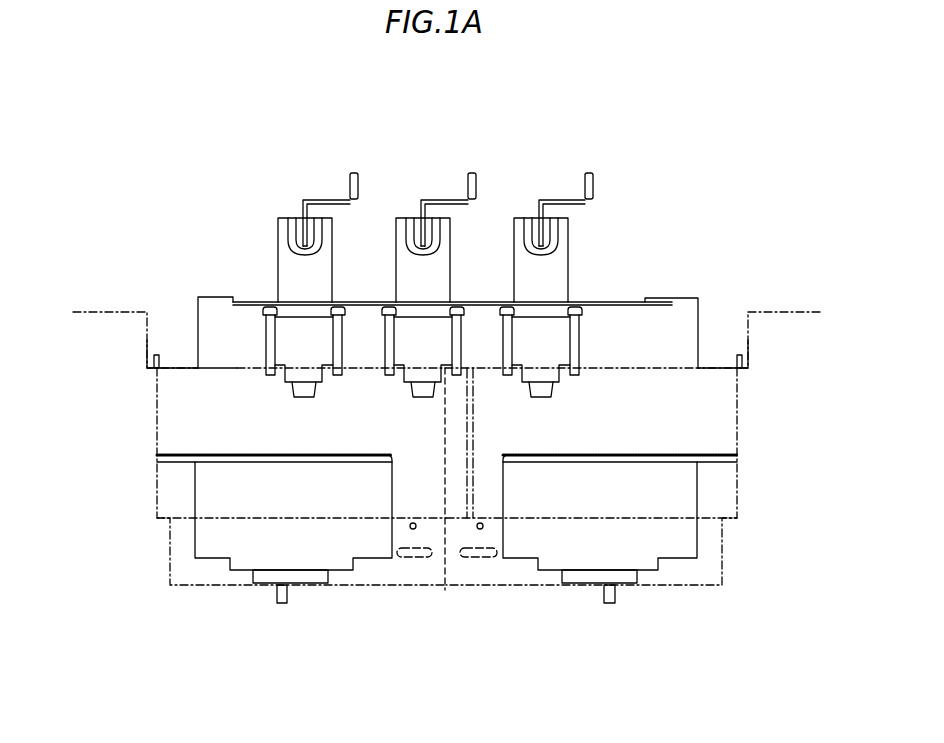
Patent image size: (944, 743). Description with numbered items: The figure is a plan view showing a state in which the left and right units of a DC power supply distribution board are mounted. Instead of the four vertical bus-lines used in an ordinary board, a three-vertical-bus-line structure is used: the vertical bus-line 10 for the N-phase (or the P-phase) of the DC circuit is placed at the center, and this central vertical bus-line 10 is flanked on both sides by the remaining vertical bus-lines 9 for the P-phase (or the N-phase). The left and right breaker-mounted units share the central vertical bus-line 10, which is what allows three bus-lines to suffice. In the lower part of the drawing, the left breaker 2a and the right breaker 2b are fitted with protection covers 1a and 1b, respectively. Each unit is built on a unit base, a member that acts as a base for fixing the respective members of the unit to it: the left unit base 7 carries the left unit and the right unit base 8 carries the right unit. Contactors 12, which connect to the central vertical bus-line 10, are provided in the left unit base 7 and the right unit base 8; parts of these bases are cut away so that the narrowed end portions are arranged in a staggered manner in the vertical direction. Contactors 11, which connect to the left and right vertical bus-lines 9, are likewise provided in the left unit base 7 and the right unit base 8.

The protection cover 1a is at (274, 555).
The protection cover 1b is at (620, 555).
The left breaker 2a is at (282, 603).
The right breaker 2b is at (611, 603).
The left unit base 7 is at (157, 440).
The right unit base 8 is at (740, 440).
The vertical bus-line 9 is at (354, 172).
The vertical bus-line 10 is at (473, 172).
The contactor 11 is at (278, 255).
The contactor 12 is at (450, 255).